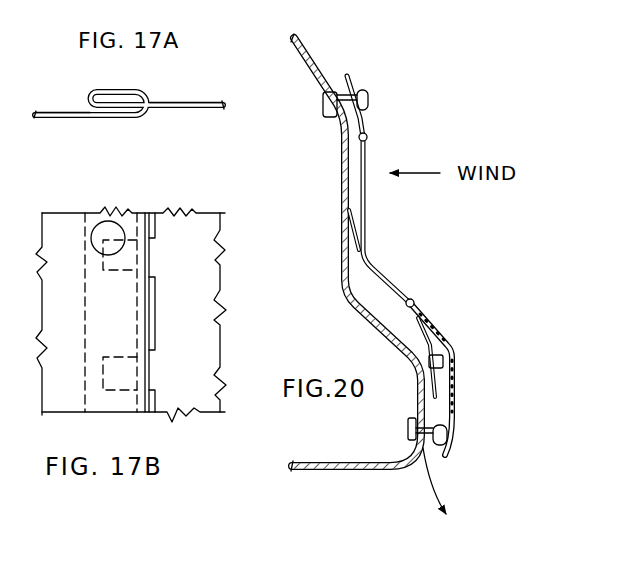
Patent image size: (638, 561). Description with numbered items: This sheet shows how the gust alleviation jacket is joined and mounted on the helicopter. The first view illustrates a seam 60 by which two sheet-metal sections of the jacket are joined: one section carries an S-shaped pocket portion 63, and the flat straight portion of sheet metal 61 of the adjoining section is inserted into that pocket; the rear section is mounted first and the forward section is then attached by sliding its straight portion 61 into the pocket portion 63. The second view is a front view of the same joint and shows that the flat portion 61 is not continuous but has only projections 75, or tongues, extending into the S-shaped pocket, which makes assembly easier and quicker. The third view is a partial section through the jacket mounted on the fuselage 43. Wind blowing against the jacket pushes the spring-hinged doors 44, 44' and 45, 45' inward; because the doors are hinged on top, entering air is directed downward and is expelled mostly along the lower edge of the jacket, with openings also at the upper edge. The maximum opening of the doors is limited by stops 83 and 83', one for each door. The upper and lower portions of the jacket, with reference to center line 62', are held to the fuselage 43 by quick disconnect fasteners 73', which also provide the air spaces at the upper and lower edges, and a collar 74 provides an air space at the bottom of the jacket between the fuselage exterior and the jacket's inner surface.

In FIG. 17A, the seam 60 is at (78, 137).
In FIG. 17A, the straight portion of sheet metal 61 is at (193, 108).
In FIG. 17A, the S-shaped pocket portion 63 is at (61, 138).
In FIG. 17B, the projections 75 is at (108, 236).
In FIG. 20, the fuselage 43 is at (317, 50).
In FIG. 20, the door 45 is at (426, 189).
In FIG. 20, the door 45' is at (439, 207).
In FIG. 20, the center line 62' is at (446, 268).
In FIG. 20, the stop 83 is at (325, 214).
In FIG. 20, the stop 83' is at (372, 357).
In FIG. 20, the door 44 is at (462, 292).
In FIG. 20, the door 44' is at (467, 379).
In FIG. 20, the quick disconnect fasteners 73' is at (431, 249).
In FIG. 20, the collar 74 is at (432, 450).